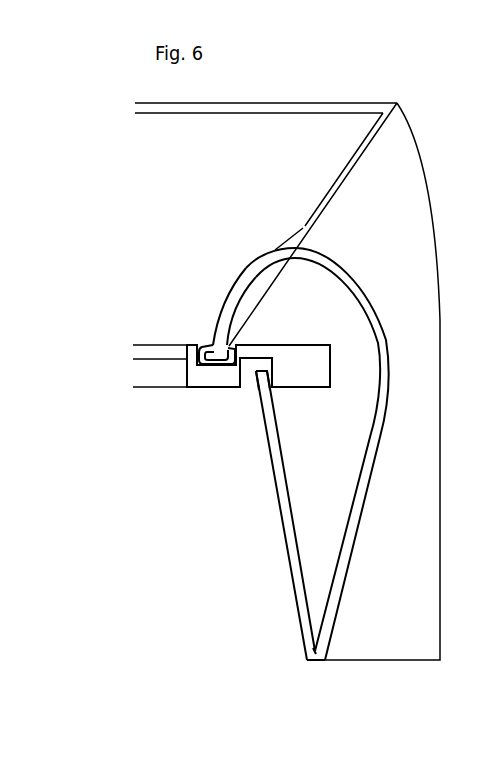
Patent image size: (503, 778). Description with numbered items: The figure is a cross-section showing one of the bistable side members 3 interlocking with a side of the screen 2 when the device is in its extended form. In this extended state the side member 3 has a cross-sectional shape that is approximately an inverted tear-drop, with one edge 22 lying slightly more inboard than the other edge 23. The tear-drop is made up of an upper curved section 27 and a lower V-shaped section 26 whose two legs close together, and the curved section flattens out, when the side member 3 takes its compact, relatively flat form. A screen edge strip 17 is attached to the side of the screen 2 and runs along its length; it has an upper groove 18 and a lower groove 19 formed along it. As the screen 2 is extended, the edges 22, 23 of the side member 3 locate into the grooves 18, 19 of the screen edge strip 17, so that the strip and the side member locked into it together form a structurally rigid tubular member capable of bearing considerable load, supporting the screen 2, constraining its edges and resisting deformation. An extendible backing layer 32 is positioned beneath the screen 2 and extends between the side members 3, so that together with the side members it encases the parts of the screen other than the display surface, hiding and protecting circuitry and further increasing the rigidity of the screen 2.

The screen 2 is at (151, 349).
The side member 3 is at (395, 198).
The screen edge strip 17 is at (193, 377).
The upper groove 18 is at (202, 346).
The lower groove 19 is at (258, 373).
The edge 22 is at (220, 300).
The edge 23 is at (262, 398).
The lower V-shaped section 26 is at (328, 630).
The upper curved section 27 is at (376, 310).
The extendible backing layer 32 is at (137, 371).